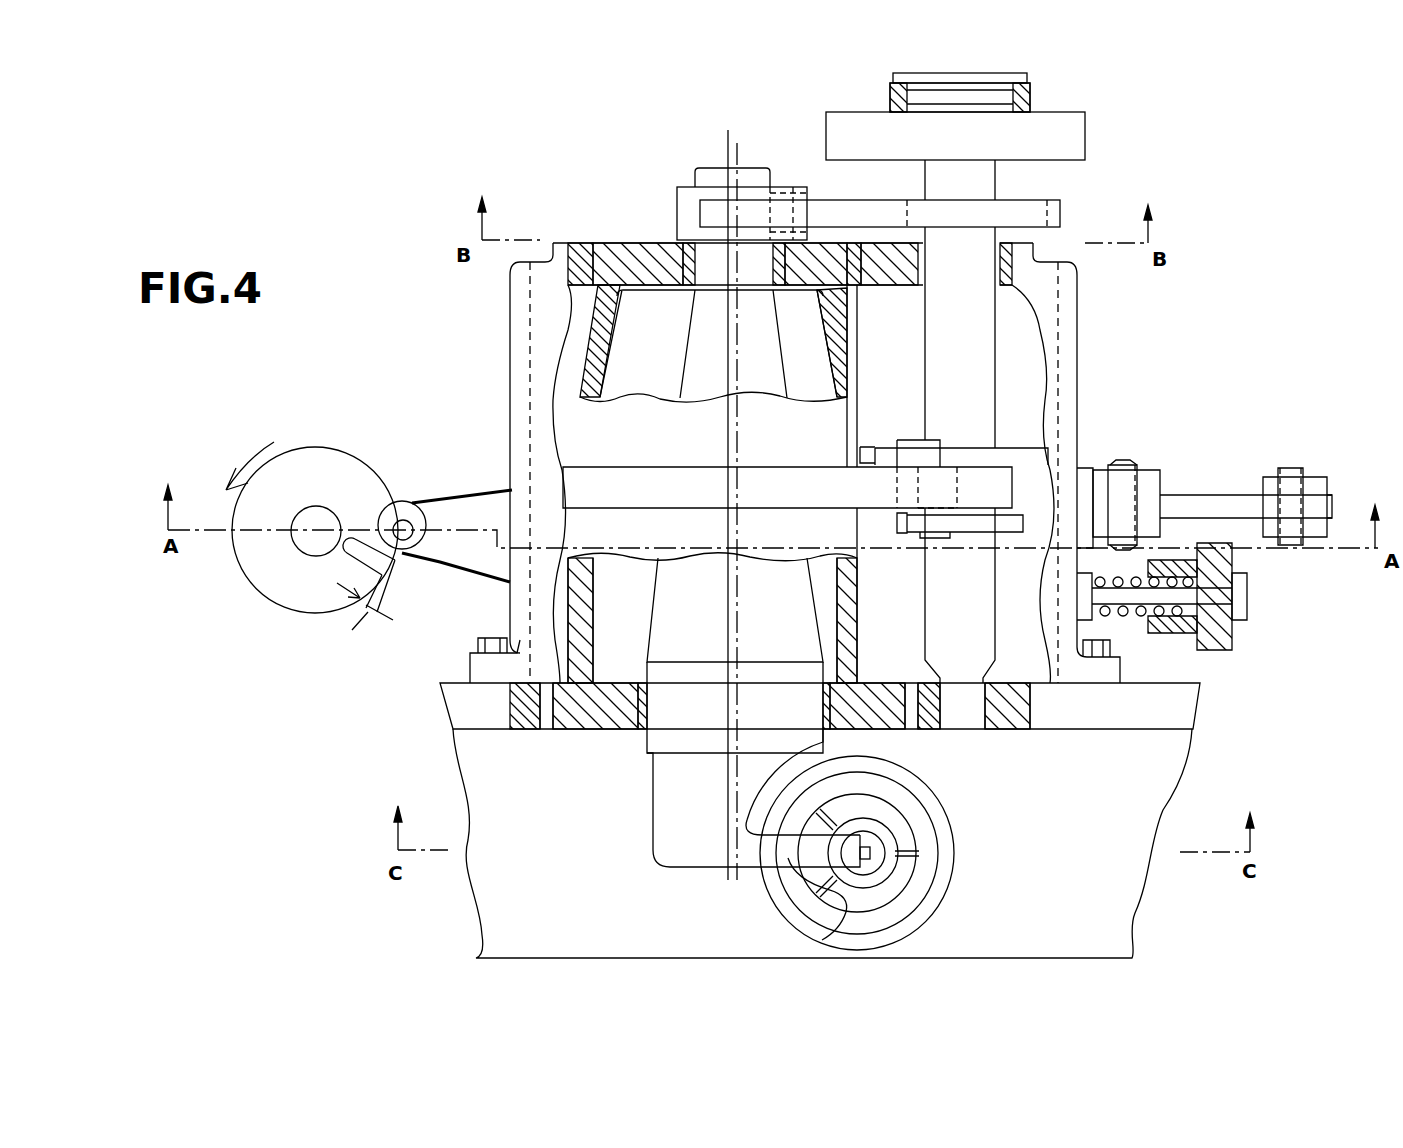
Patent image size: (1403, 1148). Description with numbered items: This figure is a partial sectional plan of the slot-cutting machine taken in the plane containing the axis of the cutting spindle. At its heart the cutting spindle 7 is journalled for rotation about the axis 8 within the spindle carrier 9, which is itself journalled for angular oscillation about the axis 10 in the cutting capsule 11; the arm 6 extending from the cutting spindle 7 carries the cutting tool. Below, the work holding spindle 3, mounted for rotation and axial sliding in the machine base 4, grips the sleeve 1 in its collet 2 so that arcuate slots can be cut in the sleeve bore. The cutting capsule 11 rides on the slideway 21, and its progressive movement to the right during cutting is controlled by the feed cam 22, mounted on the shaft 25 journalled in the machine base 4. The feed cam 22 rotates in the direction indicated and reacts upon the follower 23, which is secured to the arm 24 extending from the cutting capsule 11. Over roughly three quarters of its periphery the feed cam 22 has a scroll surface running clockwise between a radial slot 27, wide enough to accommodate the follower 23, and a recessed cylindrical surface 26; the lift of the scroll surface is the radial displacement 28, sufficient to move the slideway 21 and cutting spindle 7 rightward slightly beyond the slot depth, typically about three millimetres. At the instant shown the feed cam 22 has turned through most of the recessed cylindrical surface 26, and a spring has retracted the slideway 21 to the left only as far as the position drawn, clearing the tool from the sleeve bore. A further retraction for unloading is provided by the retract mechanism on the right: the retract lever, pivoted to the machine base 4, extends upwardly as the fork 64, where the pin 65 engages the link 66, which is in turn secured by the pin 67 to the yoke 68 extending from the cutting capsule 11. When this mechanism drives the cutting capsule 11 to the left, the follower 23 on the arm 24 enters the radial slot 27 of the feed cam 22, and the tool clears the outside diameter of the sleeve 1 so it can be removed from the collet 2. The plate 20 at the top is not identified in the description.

The sleeve 1 is at (822, 930).
The collet 2 is at (905, 872).
The work holding spindle 3 is at (897, 915).
The machine base 4 is at (508, 925).
The arm 6 is at (792, 872).
The cutting spindle 7 is at (660, 745).
The axis 8 is at (748, 212).
The spindle carrier 9 is at (585, 716).
The axis 10 is at (712, 832).
The cutting capsule 11 is at (572, 272).
The top plate 20 is at (1080, 135).
The slideway 21 is at (448, 710).
The feed cam 22 is at (272, 597).
The follower 23 is at (415, 520).
The arm 24 is at (456, 500).
The shaft 25 is at (295, 543).
The recessed cylindrical surface 26 is at (390, 490).
The radial slot 27 is at (392, 575).
The radial displacement 28 is at (366, 620).
The fork 64 is at (1315, 487).
The pin 65 is at (1292, 470).
The link 66 is at (1190, 506).
The pin 67 is at (1132, 462).
The yoke 68 is at (1088, 482).